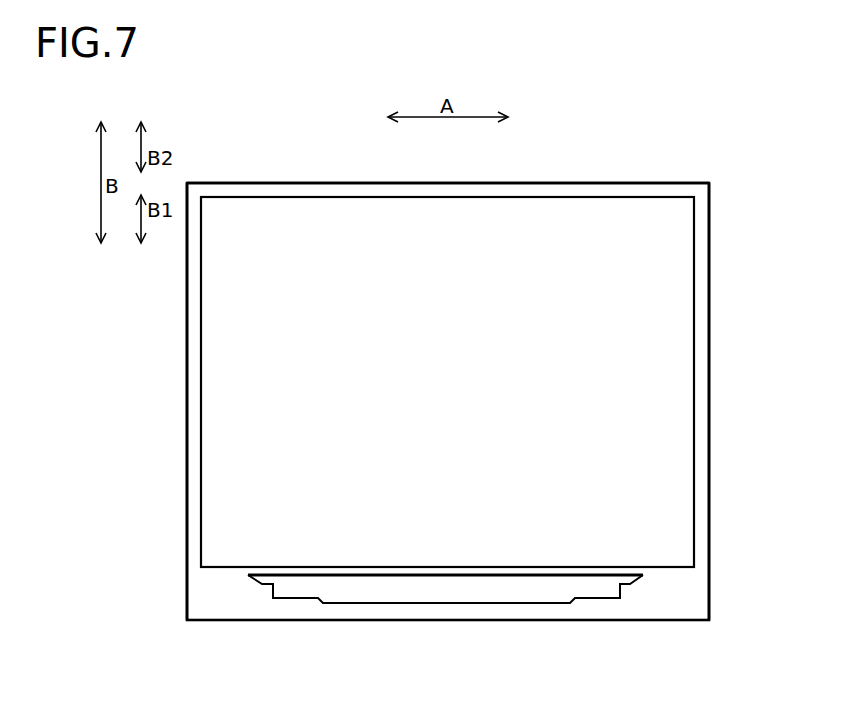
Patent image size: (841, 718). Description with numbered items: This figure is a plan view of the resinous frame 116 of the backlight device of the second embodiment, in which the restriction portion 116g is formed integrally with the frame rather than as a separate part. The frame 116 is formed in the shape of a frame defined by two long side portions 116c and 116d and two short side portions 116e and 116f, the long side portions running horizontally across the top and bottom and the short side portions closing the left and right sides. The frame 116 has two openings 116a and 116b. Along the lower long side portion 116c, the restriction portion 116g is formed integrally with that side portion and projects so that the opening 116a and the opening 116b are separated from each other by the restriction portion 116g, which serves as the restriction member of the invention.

The frame 116 is at (702, 198).
The opening 116a is at (518, 603).
The opening 116b is at (693, 424).
The long side portion 116c is at (444, 606).
The long side portion 116d is at (444, 190).
The short side portion 116e is at (703, 362).
The short side portion 116f is at (194, 383).
The restriction portion 116g is at (369, 571).